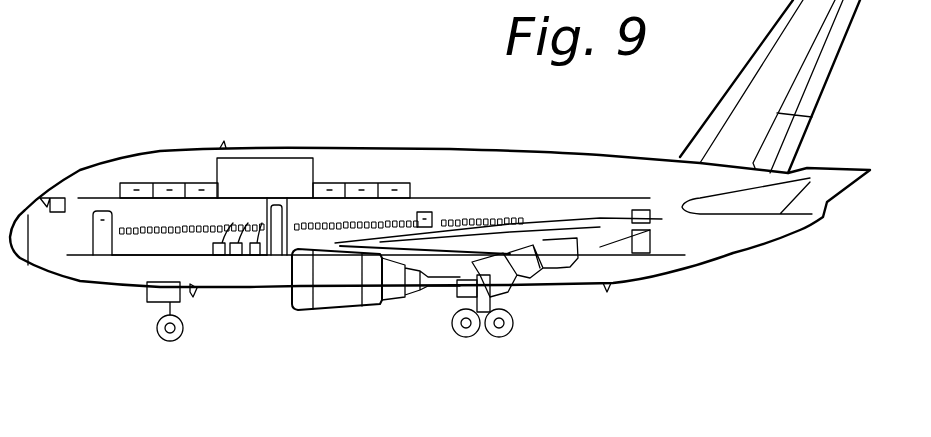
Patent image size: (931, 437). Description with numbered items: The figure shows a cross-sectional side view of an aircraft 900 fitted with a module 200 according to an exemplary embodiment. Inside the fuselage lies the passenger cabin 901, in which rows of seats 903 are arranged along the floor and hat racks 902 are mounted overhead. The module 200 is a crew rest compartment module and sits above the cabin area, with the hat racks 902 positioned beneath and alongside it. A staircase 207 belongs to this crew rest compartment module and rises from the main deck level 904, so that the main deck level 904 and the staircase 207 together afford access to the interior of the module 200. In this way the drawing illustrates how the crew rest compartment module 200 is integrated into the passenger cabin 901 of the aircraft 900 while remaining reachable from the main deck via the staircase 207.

The aircraft 900 is at (186, 83).
The hat racks 902 is at (177, 183).
The module 200 is at (280, 168).
The passenger cabin 901 is at (127, 243).
The main deck level 904 is at (150, 257).
The seats 903 is at (250, 247).
The staircase 207 is at (278, 257).